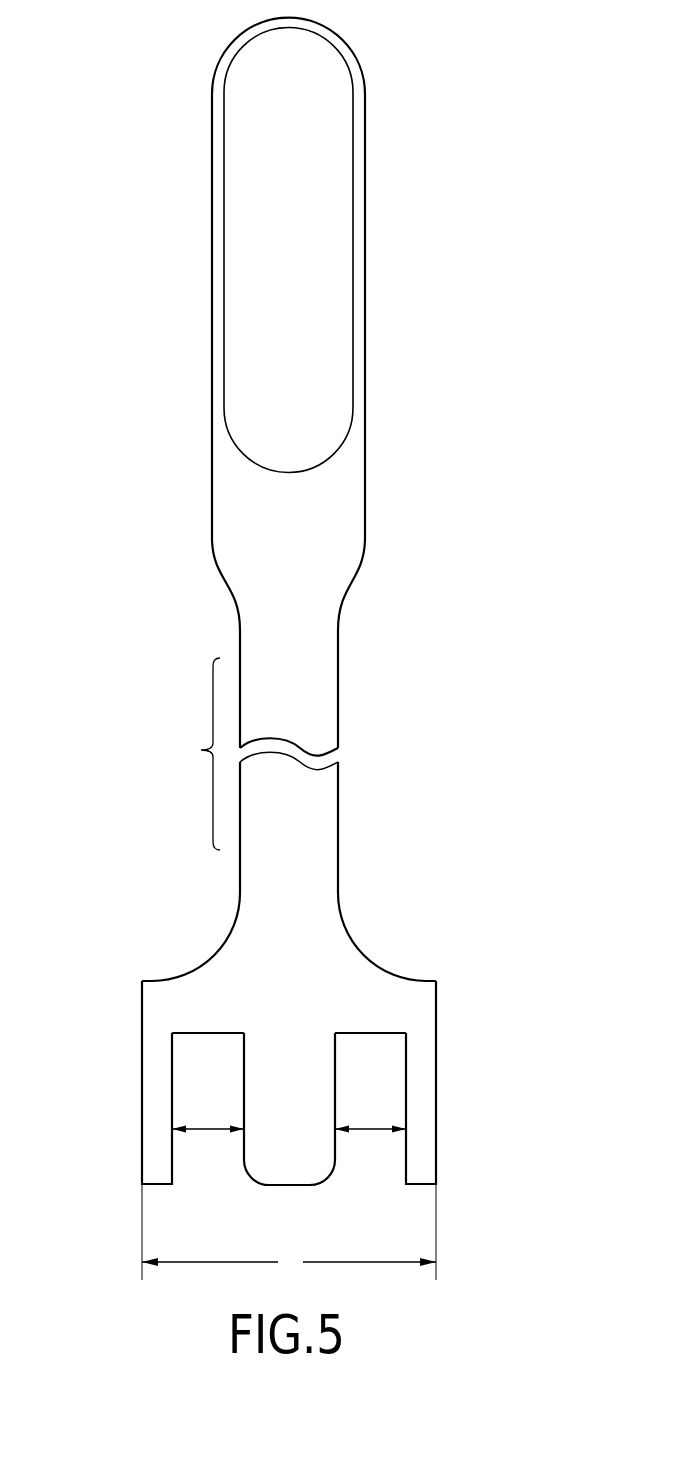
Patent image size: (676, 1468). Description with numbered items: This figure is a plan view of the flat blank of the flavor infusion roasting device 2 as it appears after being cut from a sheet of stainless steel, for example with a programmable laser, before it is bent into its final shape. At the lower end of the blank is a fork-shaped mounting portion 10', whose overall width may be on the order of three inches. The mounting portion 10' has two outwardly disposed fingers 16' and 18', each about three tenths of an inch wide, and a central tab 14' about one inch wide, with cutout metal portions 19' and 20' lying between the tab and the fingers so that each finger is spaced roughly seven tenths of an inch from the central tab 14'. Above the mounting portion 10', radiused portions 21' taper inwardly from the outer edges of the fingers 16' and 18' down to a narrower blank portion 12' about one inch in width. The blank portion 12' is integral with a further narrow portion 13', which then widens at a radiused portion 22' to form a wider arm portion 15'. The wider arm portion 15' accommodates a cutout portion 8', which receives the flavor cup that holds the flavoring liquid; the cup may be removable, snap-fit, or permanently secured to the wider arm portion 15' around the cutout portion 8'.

The flavor infusion roasting device 2 is at (400, 110).
The cutout portion 8' is at (333, 250).
The wider arm portion 15' is at (337, 279).
The radiused portion 22' is at (288, 585).
The blank portion 13' is at (338, 693).
The blank portion 12' is at (338, 822).
The radiused portions 21' is at (294, 922).
The fork-shaped mounting portion 10' is at (292, 1073).
The finger 18' is at (118, 1082).
The finger 16' is at (463, 1082).
The central tab 14' is at (296, 1138).
The cutout metal portion 20' is at (208, 1110).
The cutout metal portion 19' is at (370, 1110).